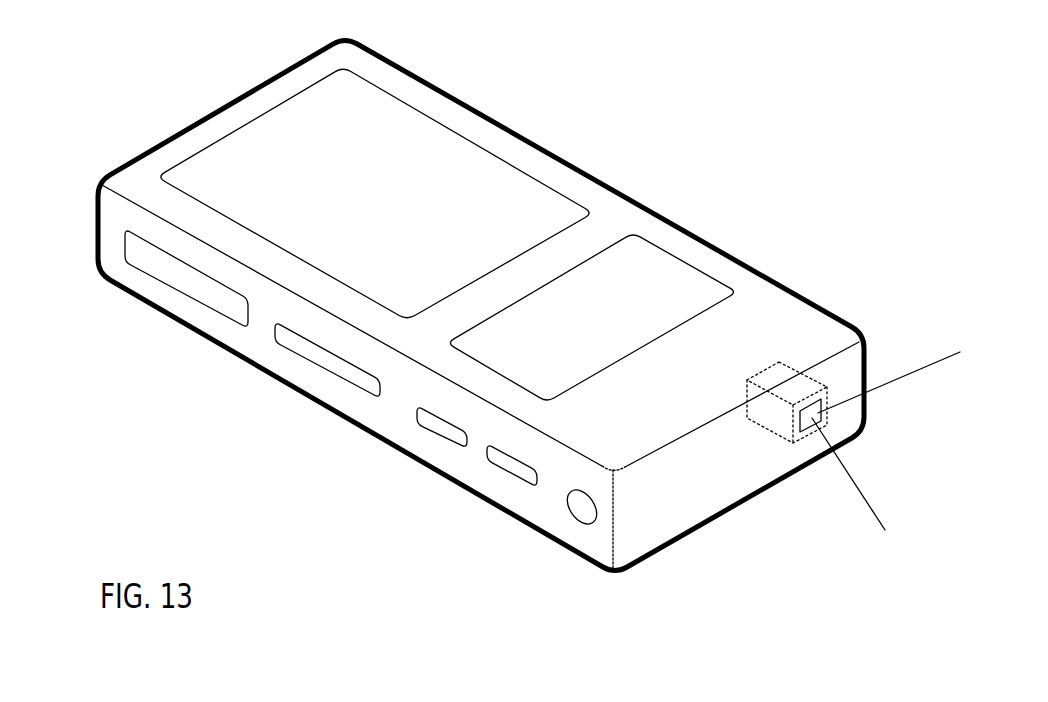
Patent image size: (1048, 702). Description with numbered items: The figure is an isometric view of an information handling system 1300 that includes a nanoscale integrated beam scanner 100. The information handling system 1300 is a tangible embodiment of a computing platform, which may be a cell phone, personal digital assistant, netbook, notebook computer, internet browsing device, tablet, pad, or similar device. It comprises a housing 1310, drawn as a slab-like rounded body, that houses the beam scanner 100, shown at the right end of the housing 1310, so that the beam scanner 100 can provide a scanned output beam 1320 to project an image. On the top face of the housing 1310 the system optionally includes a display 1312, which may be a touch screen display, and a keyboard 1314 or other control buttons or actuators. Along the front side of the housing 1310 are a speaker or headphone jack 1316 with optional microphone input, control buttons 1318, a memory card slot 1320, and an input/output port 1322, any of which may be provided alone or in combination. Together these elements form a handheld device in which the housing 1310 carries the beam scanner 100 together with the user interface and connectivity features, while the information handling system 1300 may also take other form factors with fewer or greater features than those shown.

The information handling system 1300 is at (662, 93).
The housing 1310 is at (469, 104).
The display 1312 is at (265, 143).
The keyboard 1314 is at (655, 267).
The speaker or headphone jack 1316 is at (582, 507).
The control buttons 1318 is at (487, 453).
The memory card slot 1320 is at (287, 342).
The input/output port 1322 is at (135, 245).
The beam scanner 100 is at (783, 353).